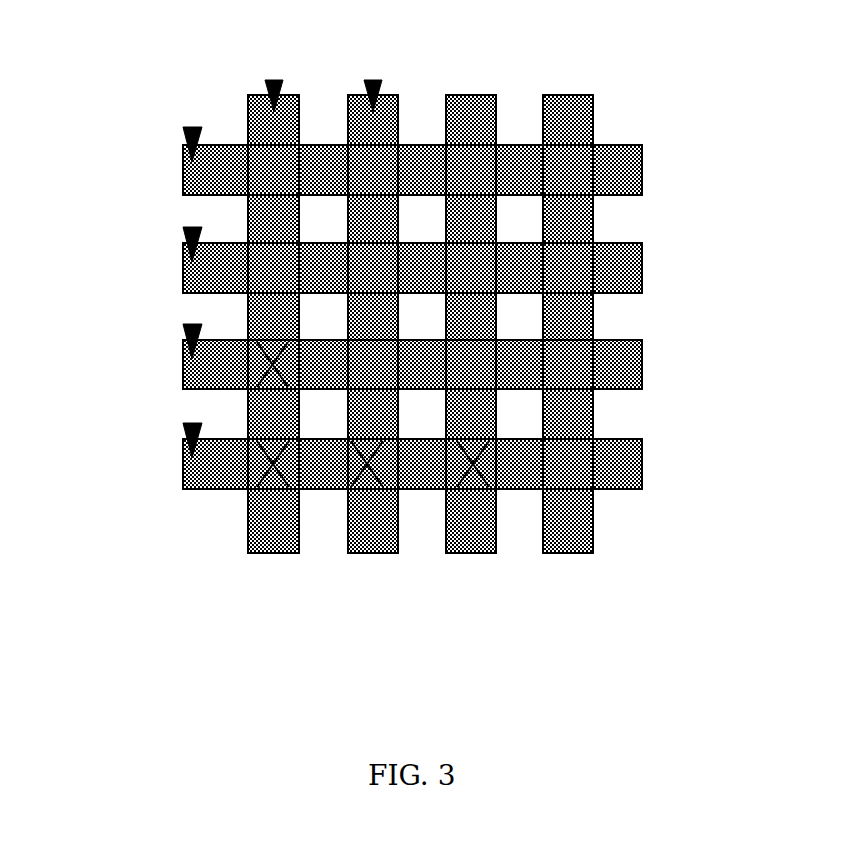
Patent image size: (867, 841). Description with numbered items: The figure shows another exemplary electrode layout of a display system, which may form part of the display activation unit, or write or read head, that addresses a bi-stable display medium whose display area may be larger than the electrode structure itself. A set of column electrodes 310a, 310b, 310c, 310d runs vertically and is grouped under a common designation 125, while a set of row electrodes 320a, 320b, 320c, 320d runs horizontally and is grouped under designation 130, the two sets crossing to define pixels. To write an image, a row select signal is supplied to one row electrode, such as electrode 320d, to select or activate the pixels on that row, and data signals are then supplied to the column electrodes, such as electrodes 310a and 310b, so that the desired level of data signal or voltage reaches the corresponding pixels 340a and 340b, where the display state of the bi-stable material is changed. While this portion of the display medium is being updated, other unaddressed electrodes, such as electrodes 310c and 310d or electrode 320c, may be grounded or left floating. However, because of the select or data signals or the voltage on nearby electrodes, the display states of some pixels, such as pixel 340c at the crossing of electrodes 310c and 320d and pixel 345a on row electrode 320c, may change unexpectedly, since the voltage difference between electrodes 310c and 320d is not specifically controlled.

The first conductive lines / word lines 125 is at (267, 81).
The second conductive lines / bit lines 130 is at (202, 423).
The column electrode 310a is at (258, 540).
The column electrode 310b is at (367, 540).
The column electrode 310c is at (474, 540).
The column electrode 310d is at (567, 540).
The row electrode 320a is at (612, 169).
The row electrode 320b is at (612, 263).
The row electrode 320c is at (612, 378).
The row electrode 320d is at (627, 471).
The pixel 340a is at (272, 468).
The pixel 340b is at (367, 468).
The pixel 340c is at (473, 468).
The pixel 345a is at (272, 364).